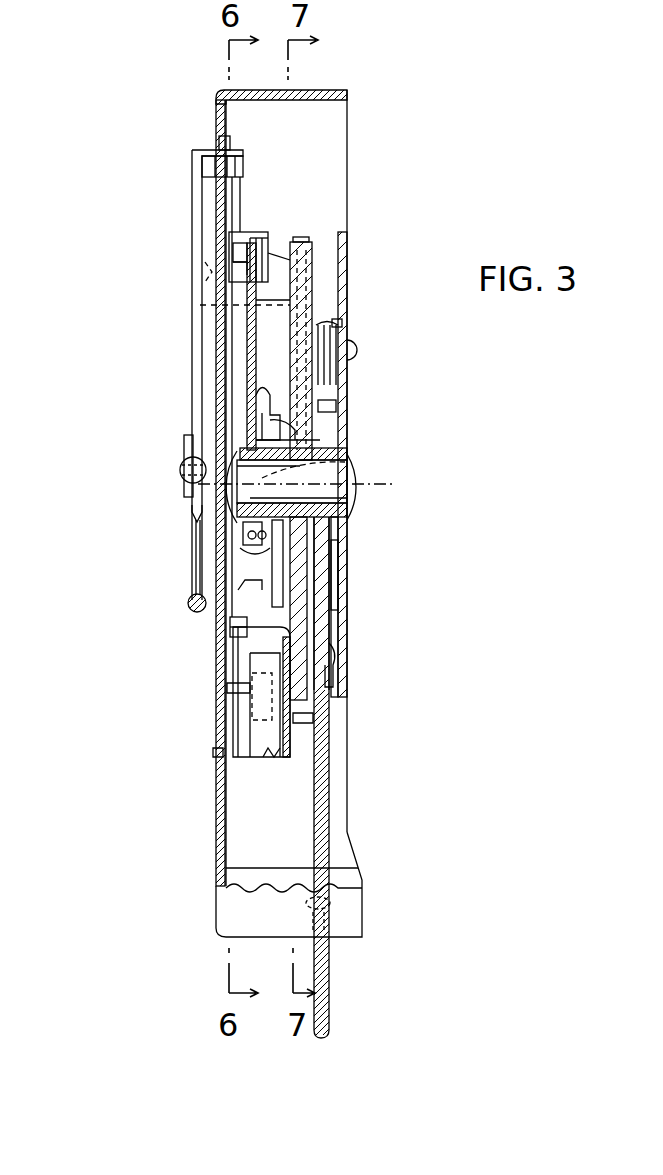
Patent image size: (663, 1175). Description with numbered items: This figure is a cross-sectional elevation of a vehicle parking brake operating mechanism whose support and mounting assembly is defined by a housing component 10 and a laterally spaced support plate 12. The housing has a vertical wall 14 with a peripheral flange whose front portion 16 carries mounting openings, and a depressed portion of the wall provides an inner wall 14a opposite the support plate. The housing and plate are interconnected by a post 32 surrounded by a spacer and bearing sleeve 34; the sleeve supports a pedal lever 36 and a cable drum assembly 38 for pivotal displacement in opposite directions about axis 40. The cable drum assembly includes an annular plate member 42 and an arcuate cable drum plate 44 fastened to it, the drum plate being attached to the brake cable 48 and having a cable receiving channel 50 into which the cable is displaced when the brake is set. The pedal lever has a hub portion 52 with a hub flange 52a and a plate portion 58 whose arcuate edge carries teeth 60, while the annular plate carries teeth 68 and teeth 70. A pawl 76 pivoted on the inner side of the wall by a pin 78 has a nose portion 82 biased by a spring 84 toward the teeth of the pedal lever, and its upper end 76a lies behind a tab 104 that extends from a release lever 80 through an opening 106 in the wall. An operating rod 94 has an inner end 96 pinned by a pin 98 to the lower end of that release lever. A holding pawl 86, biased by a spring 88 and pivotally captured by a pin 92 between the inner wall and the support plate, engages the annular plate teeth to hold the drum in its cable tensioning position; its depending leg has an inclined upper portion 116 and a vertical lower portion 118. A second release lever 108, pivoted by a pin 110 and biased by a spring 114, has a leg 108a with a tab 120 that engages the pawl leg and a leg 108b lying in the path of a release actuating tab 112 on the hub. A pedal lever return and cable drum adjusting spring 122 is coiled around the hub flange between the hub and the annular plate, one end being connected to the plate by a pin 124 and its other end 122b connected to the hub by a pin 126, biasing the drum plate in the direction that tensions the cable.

The housing component 10 is at (211, 858).
The support plate 12 is at (358, 254).
The vertical wall 14 is at (215, 822).
The inner wall 14a is at (230, 305).
The front portion 16 is at (316, 90).
The post 32 is at (357, 476).
The spacer and bearing sleeve 34 is at (348, 526).
The pedal lever 36 is at (271, 769).
The cable drum assembly 38 is at (346, 560).
The axis 40 is at (342, 484).
The annular plate member 42 is at (348, 613).
The arcuate cable drum plate 44 is at (335, 583).
The brake cable 48 is at (321, 823).
The cable receiving channel 50 is at (342, 665).
The hub portion 52 is at (245, 333).
The hub flange 52a is at (205, 518).
The plate portion 58 is at (230, 255).
The teeth 60 is at (248, 240).
The teeth 68 is at (300, 242).
The teeth 70 is at (321, 747).
The pawl 76 is at (228, 207).
The upper end 76a is at (232, 150).
The pin 78 is at (207, 270).
The release lever 80 is at (195, 395).
The nose portion 82 is at (230, 243).
The biasing spring 84 is at (262, 232).
The holding pawl 86 is at (333, 398).
The biasing spring 88 is at (330, 335).
The pin 92 is at (356, 350).
The operating rod 94 is at (188, 603).
The inner end 96 is at (195, 498).
The pin 98 is at (181, 468).
The tab 104 is at (240, 165).
The opening 106 is at (215, 148).
The release lever 108 is at (237, 652).
The leg 108a is at (240, 590).
The leg 108b is at (228, 640).
The pin 110 is at (228, 704).
The release actuating tab 112 is at (230, 620).
The biasing spring 114 is at (235, 686).
The laterally inclined upper portion 116 is at (352, 450).
The vertical lower portion 118 is at (356, 563).
The tab 120 is at (265, 572).
The pedal lever return and cable drum adjusting spring 122 is at (238, 548).
The other end 122b is at (262, 418).
The pin 124 is at (332, 413).
The pin 126 is at (248, 352).